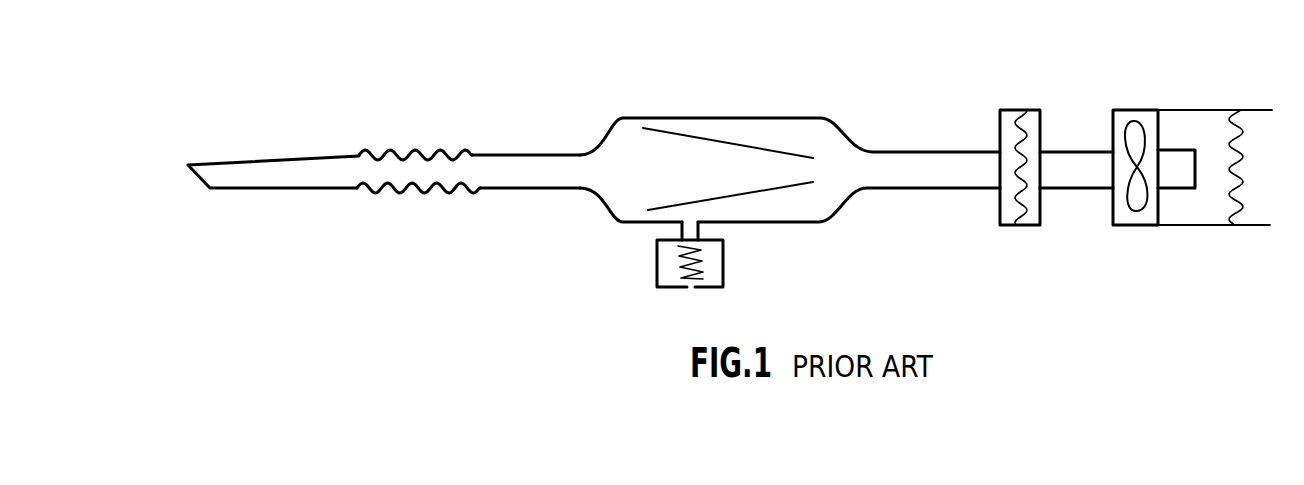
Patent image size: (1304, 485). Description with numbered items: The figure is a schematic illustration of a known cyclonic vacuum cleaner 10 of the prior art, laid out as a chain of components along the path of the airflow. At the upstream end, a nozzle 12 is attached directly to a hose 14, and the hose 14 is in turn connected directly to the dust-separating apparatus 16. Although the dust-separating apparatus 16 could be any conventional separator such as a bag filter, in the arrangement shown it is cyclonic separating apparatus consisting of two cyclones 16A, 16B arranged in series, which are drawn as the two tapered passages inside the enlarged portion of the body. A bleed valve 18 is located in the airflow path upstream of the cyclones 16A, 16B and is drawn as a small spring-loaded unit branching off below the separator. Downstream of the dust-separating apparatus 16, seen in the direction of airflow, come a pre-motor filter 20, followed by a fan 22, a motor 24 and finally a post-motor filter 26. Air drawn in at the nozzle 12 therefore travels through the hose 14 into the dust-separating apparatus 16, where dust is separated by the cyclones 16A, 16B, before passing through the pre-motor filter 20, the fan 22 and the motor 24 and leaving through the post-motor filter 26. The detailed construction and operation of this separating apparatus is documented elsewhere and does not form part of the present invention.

The vacuum cleaner 10 is at (457, 128).
The nozzle 12 is at (307, 190).
The hose 14 is at (447, 193).
The dust-separating apparatus 16 is at (812, 112).
The cyclone 16A is at (738, 132).
The cyclone 16B is at (787, 190).
The bleed valve 18 is at (725, 260).
The pre-motor filter 20 is at (1027, 113).
The fan 22 is at (1145, 121).
The motor 24 is at (1180, 180).
The post-motor filter 26 is at (1253, 137).